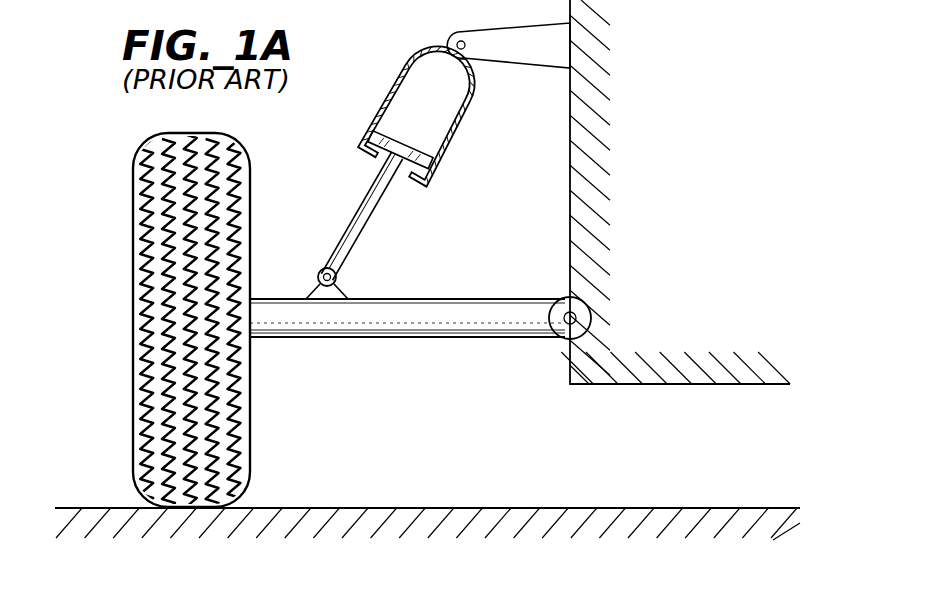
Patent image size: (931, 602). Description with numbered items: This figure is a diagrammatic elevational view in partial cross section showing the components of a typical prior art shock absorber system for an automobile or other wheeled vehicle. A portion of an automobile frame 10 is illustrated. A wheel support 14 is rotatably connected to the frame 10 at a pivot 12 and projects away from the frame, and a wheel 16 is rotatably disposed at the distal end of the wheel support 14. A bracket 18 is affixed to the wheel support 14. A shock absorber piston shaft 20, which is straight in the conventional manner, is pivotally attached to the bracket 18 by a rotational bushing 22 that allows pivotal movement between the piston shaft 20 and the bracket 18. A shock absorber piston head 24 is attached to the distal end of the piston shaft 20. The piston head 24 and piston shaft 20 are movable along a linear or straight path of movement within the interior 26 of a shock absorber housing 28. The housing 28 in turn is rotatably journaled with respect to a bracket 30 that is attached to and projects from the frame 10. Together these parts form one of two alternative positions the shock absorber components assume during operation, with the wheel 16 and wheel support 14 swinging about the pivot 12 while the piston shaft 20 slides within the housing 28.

The automobile frame 10 is at (640, 384).
The pivot 12 is at (560, 340).
The wheel support 14 is at (385, 338).
The wheel 16 is at (133, 370).
The bracket 18 is at (342, 289).
The shock absorber piston shaft 20 is at (340, 222).
The rotational bushing 22 is at (318, 270).
The shock absorber piston head 24 is at (400, 134).
The interior 26 is at (445, 120).
The shock absorber housing 28 is at (450, 153).
The bracket 30 is at (513, 45).